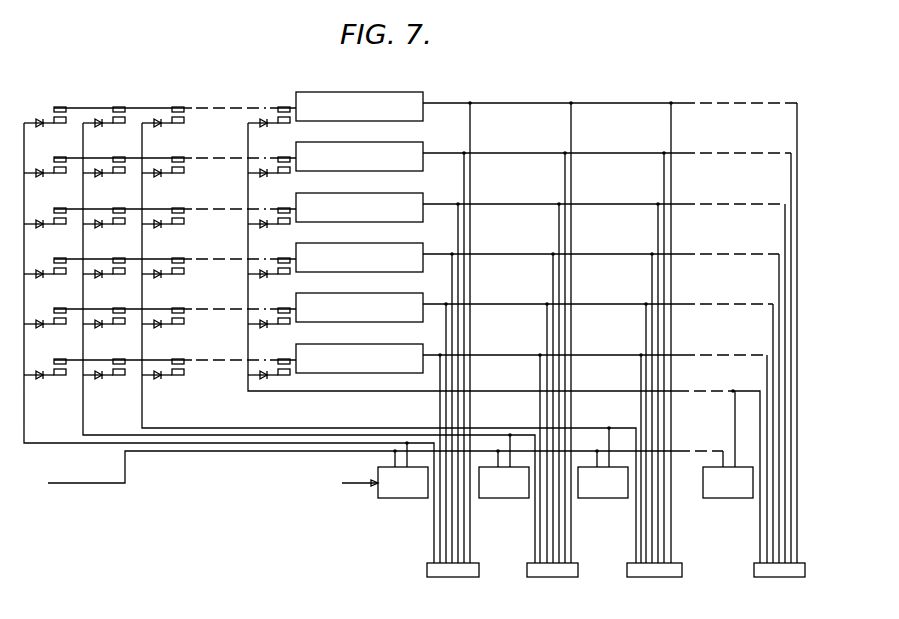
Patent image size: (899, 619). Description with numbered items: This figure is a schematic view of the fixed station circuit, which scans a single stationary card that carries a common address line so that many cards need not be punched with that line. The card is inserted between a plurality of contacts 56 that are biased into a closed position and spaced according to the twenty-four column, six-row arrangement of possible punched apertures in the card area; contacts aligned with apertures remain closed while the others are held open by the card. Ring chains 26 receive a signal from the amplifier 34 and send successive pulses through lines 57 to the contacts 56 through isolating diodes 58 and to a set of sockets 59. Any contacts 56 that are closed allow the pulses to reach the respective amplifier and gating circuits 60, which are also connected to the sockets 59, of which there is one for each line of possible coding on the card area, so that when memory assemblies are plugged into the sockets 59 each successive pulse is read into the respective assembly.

The ring chains 26 is at (392, 498).
The amplifier 34 is at (373, 477).
The contacts 56 is at (184, 160).
The lines 57 is at (300, 445).
The isolating diodes 58 is at (38, 172).
The sockets 59 is at (427, 570).
The amplifier and gating circuits 60 is at (328, 92).